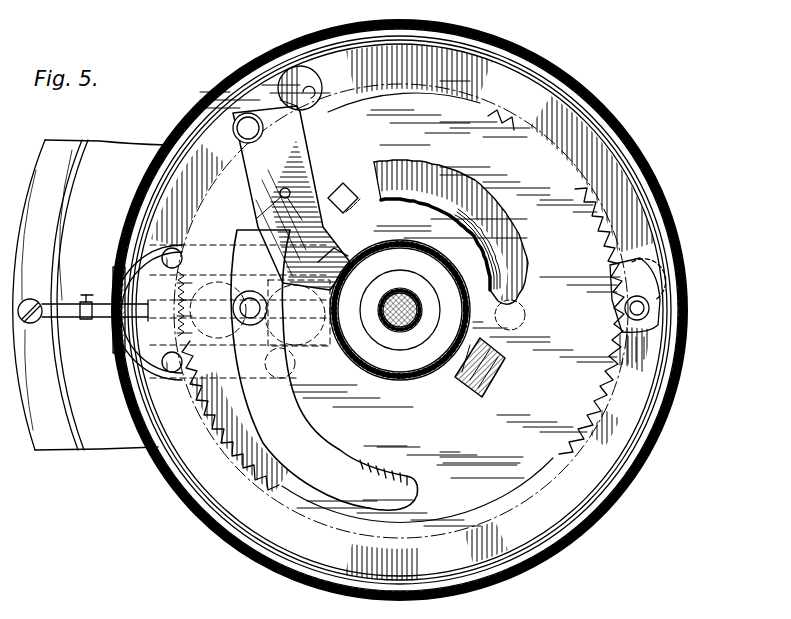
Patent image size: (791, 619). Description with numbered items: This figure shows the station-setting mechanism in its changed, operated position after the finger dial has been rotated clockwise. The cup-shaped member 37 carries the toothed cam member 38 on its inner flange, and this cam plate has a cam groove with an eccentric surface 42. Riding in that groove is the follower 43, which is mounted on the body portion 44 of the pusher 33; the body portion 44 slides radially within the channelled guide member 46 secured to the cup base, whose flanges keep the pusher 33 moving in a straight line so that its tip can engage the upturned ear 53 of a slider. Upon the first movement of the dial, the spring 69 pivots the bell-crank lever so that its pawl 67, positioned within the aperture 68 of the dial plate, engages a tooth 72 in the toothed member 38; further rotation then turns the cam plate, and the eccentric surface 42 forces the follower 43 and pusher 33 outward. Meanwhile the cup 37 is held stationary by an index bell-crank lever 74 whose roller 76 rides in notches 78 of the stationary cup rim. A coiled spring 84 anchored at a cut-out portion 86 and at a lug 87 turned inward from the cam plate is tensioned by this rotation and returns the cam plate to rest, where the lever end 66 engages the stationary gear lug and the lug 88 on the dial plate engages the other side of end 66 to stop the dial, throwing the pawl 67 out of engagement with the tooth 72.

The pusher 33 is at (105, 300).
The cup-shaped member 37 is at (213, 478).
The toothed cam member 38 is at (541, 456).
The eccentric surface 42 is at (355, 458).
The follower 43 is at (230, 230).
The body portion 44 is at (268, 335).
The channelled guide member 46 is at (300, 408).
The upturned ear 53 is at (90, 318).
The end of the bell-crank lever 66 is at (400, 310).
The pawl 67 is at (262, 68).
The aperture 68 is at (300, 66).
The spring 69 is at (280, 196).
The tooth 72 is at (336, 183).
The bell-crank lever 74 is at (640, 280).
The roller 76 is at (660, 287).
The notches 78 is at (650, 305).
The coiled spring 84 is at (500, 255).
The cut-out portion 86 is at (527, 303).
The lug 87 is at (455, 380).
The lug 88 is at (342, 247).